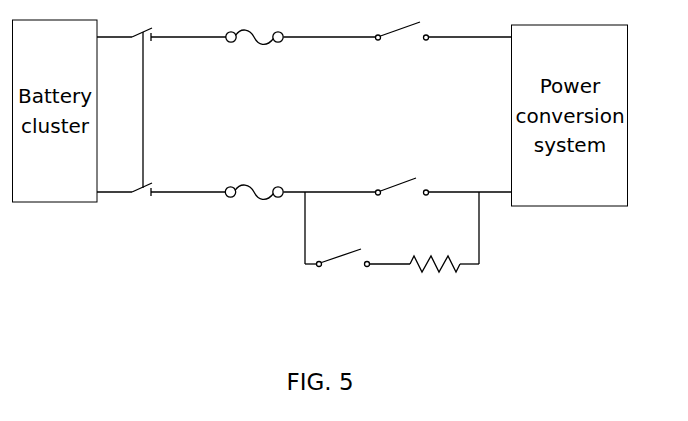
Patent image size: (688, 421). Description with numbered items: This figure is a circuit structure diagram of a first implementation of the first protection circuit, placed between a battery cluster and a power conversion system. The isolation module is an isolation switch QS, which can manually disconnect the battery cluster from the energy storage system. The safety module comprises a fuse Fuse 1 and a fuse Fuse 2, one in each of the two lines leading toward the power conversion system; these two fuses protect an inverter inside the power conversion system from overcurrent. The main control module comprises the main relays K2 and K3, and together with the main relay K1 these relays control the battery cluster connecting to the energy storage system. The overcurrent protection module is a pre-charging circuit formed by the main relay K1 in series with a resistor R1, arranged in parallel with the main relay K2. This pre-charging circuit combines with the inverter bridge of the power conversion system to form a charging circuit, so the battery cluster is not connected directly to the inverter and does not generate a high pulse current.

The isolation switch QS is at (143, 129).
The fuse Fuse 1 is at (257, 177).
The fuse Fuse 2 is at (256, 24).
The main relay K1 is at (343, 276).
The main relay K2 is at (402, 177).
The main relay K3 is at (402, 46).
The resistor R1 is at (435, 279).